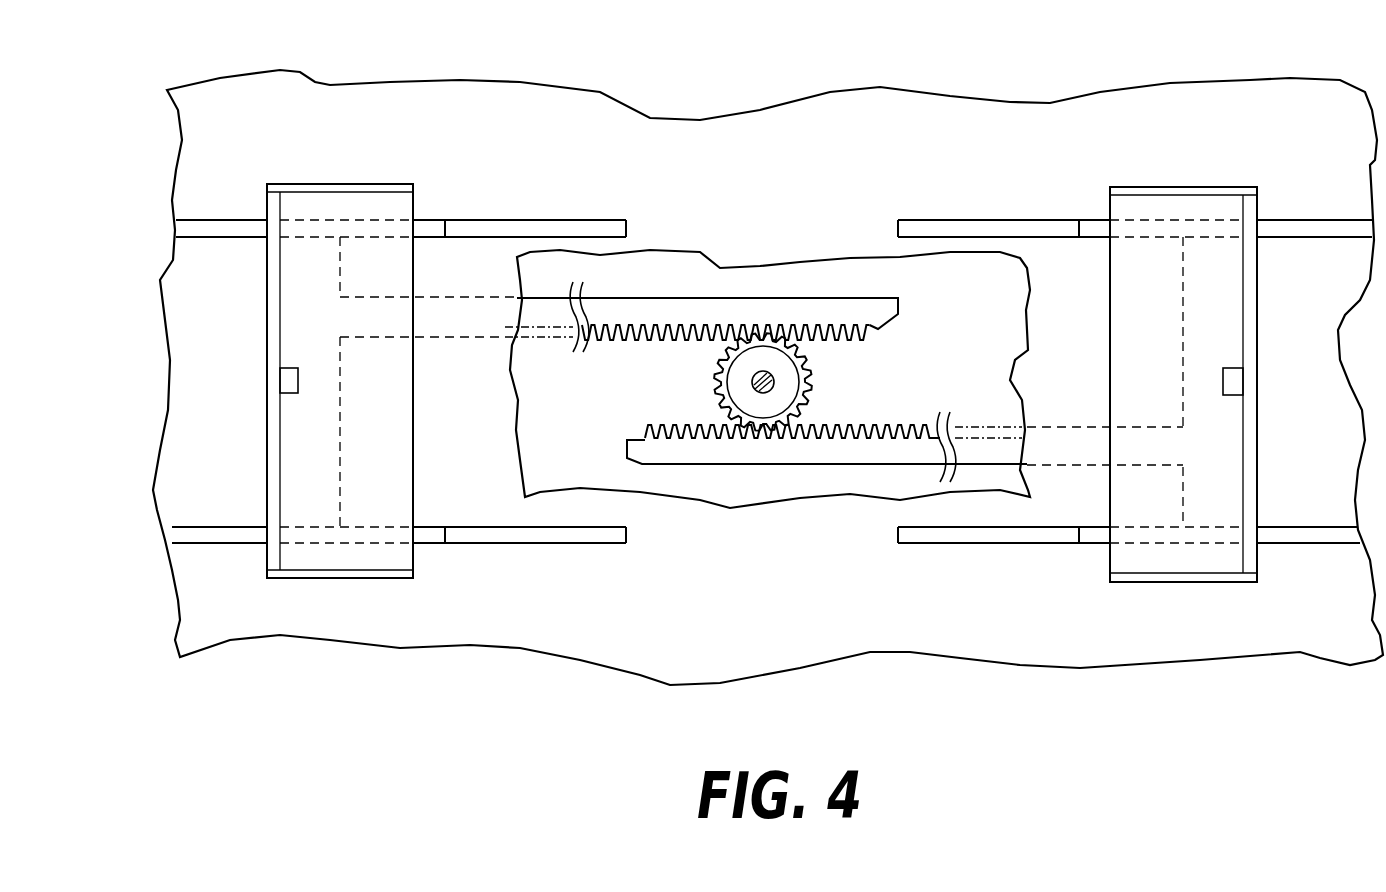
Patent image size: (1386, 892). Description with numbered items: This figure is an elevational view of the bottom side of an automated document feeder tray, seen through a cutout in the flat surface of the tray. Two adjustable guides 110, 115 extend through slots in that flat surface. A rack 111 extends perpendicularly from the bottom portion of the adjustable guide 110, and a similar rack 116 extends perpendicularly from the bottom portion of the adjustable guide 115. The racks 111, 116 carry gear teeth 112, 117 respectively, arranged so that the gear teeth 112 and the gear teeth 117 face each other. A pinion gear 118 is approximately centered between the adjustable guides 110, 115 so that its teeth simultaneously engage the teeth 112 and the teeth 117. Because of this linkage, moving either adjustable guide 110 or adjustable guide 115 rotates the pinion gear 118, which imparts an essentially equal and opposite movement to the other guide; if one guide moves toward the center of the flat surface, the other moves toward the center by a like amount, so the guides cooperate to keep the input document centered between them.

The adjustable guide 110 is at (340, 135).
The adjustable guide 115 is at (1185, 137).
The rack 111 is at (660, 288).
The gear teeth 112 is at (670, 340).
The rack 116 is at (765, 470).
The gear teeth 117 is at (845, 425).
The pinion gear 118 is at (738, 379).